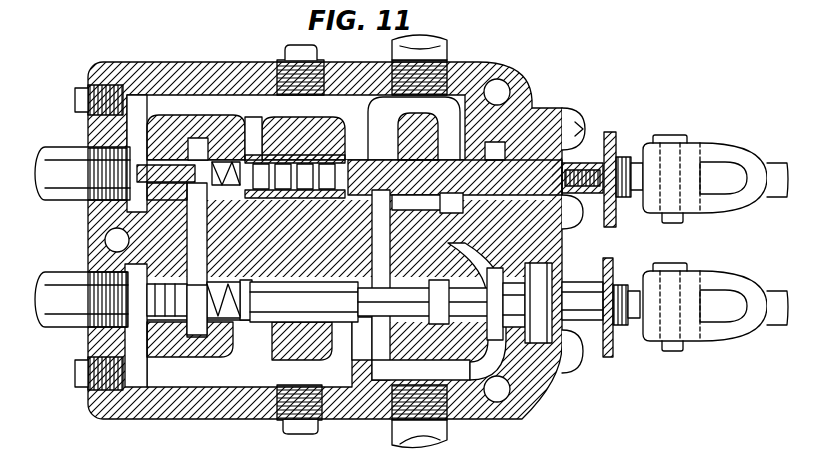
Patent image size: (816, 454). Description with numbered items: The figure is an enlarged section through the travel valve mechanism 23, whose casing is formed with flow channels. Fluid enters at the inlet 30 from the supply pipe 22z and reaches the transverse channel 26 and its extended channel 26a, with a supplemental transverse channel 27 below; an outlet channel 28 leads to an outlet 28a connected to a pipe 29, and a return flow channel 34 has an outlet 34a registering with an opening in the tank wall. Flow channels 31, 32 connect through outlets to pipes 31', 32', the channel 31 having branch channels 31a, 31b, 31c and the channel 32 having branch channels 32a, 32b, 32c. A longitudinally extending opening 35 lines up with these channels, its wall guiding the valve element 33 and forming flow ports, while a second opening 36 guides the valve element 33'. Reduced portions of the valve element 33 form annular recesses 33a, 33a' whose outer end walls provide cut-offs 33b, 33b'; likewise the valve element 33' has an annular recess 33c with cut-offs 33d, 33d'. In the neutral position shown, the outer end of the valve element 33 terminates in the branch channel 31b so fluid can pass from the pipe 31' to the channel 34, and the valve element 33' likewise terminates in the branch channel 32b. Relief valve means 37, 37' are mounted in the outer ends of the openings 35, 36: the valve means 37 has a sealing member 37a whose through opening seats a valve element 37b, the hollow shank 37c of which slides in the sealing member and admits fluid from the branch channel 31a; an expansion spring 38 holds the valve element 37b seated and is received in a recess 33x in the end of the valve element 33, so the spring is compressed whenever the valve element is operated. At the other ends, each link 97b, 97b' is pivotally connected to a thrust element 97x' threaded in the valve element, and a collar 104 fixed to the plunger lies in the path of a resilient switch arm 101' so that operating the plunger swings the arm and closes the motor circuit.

The inlet 30 is at (472, 68).
The longitudinally extending opening 35 is at (541, 98).
The flow channel 31 is at (168, 124).
The sealing member 37a is at (147, 155).
The valve element 37b is at (208, 130).
The branch channel 31b is at (252, 145).
The annular recess 33a is at (418, 136).
The cut-off 33b is at (414, 128).
The annular recess 33a' is at (489, 135).
The valve element 33 is at (481, 146).
The recess 33x is at (309, 156).
The hollow shank 37c is at (160, 190).
The relief valve means 37 is at (198, 174).
The expansion spring 38 is at (347, 160).
The pipe 31' is at (80, 159).
The branch channel 31a is at (115, 168).
The branch channel 31c is at (360, 157).
The supply pipe 22z is at (455, 45).
The cut-off 33d is at (411, 285).
The extended channel 26a is at (435, 214).
The annular recess 33c is at (421, 370).
The cut-off 33b' is at (477, 304).
The transverse channel 26 is at (370, 237).
The supplemental transverse channel 27 is at (448, 252).
The flow channel 32 is at (162, 353).
The longitudinally extending opening 36 is at (220, 355).
The branch channel 32b is at (248, 335).
The pipe 32' is at (79, 298).
The branch channel 32a is at (120, 342).
The branch channel 32c is at (340, 286).
The return flow channel 34 is at (232, 272).
The outlet 34a is at (187, 236).
The relief valve means 37' is at (197, 310).
The cut-off 33d' is at (519, 303).
The outlet channel 28 is at (528, 376).
The outlet 28a is at (385, 410).
The pipe 29 is at (450, 425).
The valve mechanism 23 is at (70, 247).
The switch arm 101' is at (637, 234).
The thrust element 97x' is at (597, 235).
The collar 104 is at (612, 259).
The valve element 33' is at (595, 342).
The link 97b is at (715, 171).
The link 97b' is at (715, 314).